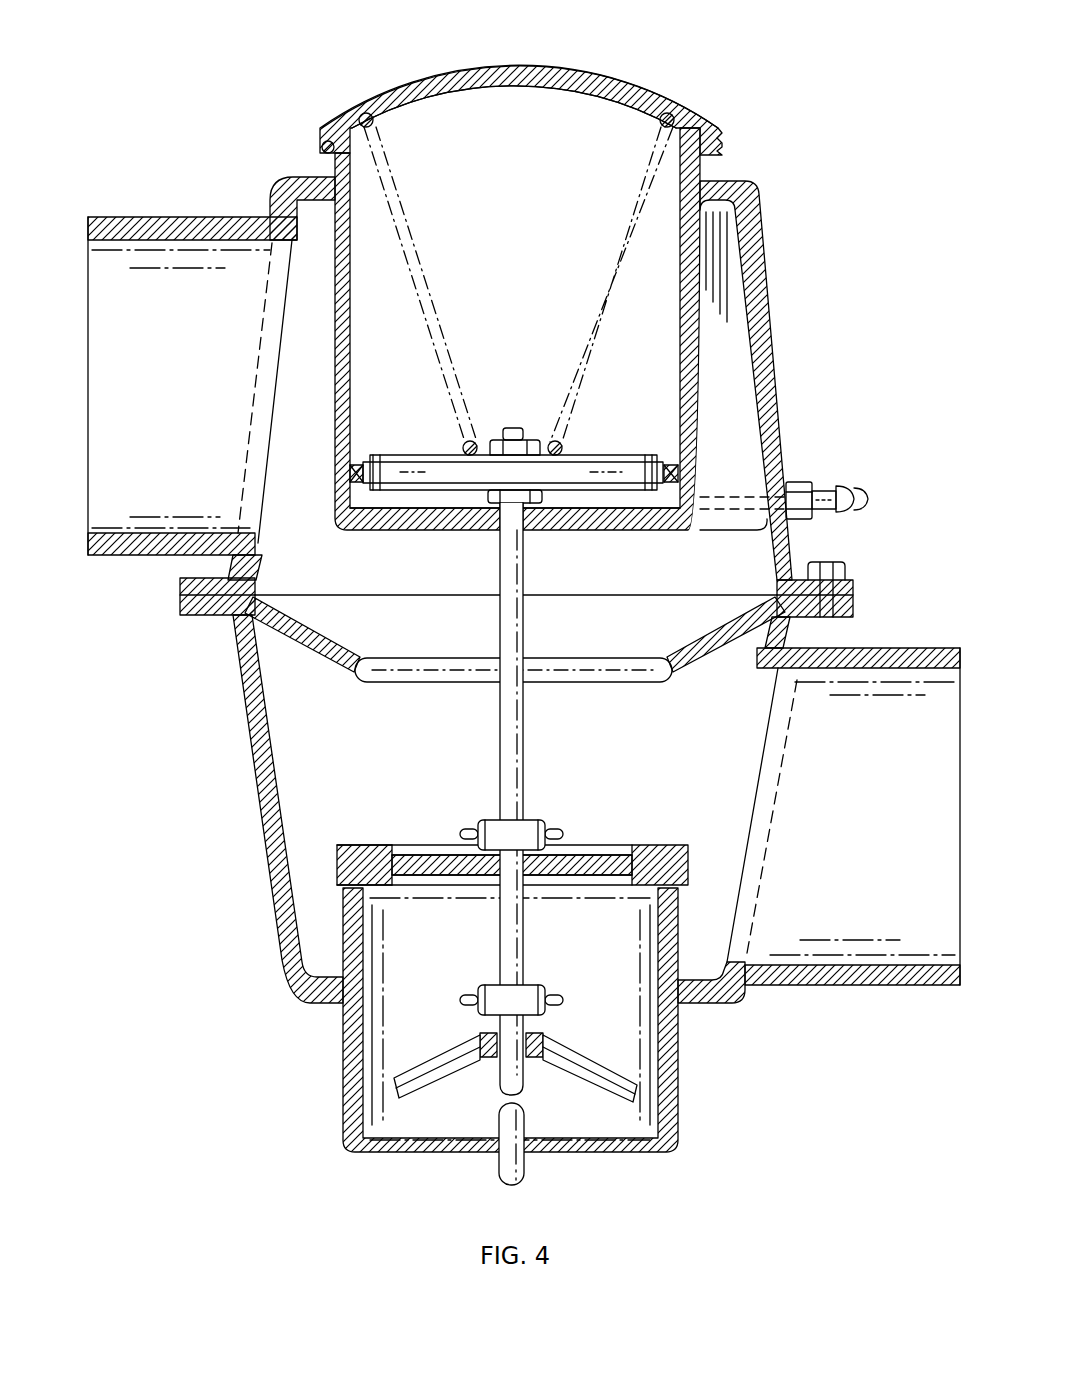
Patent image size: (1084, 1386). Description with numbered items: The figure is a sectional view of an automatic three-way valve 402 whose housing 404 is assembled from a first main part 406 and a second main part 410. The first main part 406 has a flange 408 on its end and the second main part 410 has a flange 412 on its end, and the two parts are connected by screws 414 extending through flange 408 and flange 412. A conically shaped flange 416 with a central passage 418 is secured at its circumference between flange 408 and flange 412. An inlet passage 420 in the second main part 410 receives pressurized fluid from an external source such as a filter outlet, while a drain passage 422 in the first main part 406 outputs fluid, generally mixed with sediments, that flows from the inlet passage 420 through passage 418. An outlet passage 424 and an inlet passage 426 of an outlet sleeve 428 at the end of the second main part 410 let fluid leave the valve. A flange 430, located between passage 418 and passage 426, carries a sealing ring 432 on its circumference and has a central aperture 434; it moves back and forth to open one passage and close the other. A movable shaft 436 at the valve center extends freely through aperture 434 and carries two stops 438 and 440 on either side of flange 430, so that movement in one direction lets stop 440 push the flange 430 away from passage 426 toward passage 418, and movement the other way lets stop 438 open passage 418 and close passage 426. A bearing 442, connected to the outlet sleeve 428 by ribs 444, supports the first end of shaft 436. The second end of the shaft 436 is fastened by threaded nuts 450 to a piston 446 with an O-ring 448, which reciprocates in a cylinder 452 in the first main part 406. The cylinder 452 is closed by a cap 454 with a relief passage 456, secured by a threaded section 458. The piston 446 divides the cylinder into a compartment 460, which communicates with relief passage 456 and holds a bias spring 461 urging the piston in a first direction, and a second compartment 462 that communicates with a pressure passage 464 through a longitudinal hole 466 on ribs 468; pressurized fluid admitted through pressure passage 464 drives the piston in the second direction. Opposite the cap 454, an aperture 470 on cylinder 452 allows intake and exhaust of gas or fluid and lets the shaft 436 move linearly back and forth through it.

The automatic three-way valve 402 is at (328, 83).
The housing 404 is at (790, 342).
The first main part 406 is at (765, 275).
The flange 408 is at (842, 588).
The second main part 410 is at (258, 797).
The flange 412 is at (833, 607).
The screws 414 is at (834, 565).
The conically shaped flange 416 is at (312, 660).
The passage 418 is at (585, 672).
The inlet passage 420 is at (865, 816).
The drain passage 422 is at (179, 386).
The outlet passage 424 is at (432, 1115).
The inlet passage 426 is at (432, 878).
The outlet sleeve 428 is at (672, 1065).
The flange 430 is at (588, 858).
The sealing ring 432 is at (365, 846).
The aperture 434 is at (553, 872).
The movable shaft 436 is at (505, 745).
The stop 438 is at (488, 822).
The stop 440 is at (532, 988).
The bearing 442 is at (488, 1036).
The ribs 444 is at (578, 1065).
The piston 446 is at (410, 452).
The O-ring 448 is at (352, 472).
The threaded nuts 450 is at (487, 432).
The cylinder 452 is at (680, 272).
The cap 454 is at (558, 70).
The relief passage 456 is at (648, 85).
The threaded section 458 is at (322, 148).
The compartment 460 is at (505, 140).
The bias spring 461 is at (378, 124).
The second compartment 462 is at (395, 510).
The pressure passage 464 is at (872, 495).
The longitudinal hole 466 is at (738, 500).
The ribs 468 is at (738, 400).
The aperture 470 is at (528, 518).